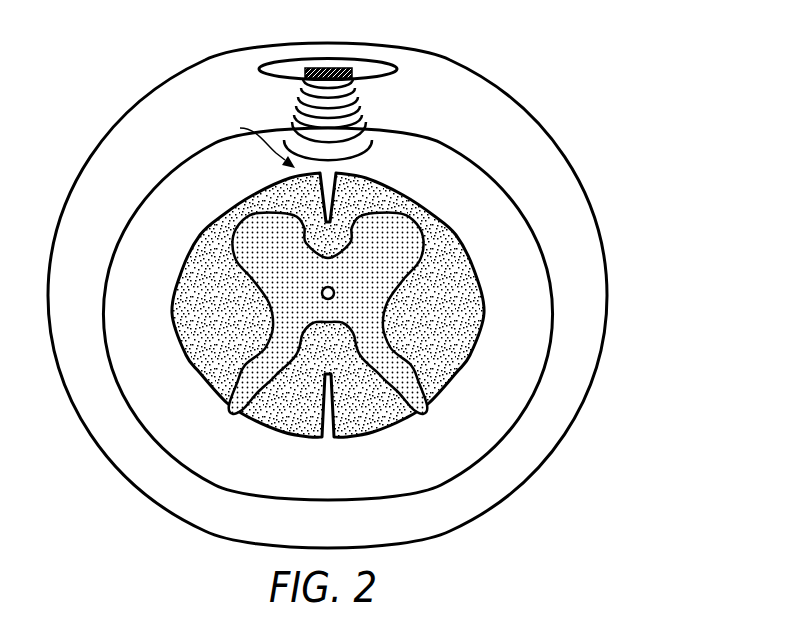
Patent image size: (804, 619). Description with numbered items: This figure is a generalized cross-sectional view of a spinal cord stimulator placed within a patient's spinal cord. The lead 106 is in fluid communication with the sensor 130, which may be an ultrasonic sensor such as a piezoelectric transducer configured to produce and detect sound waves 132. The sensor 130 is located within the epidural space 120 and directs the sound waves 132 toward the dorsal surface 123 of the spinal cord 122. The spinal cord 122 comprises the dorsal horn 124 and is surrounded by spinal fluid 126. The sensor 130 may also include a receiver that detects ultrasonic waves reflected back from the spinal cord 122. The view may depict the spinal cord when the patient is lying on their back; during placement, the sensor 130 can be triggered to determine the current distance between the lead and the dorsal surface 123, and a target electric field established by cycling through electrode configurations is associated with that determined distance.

The lead 106 is at (303, 60).
The sensor 130 is at (350, 70).
The sound waves 132 is at (299, 115).
The dorsal surface 123 is at (240, 128).
The epidural space 120 is at (448, 80).
The spinal fluid 126 is at (457, 172).
The spinal cord 122 is at (463, 323).
The dorsal horn 124 is at (410, 248).